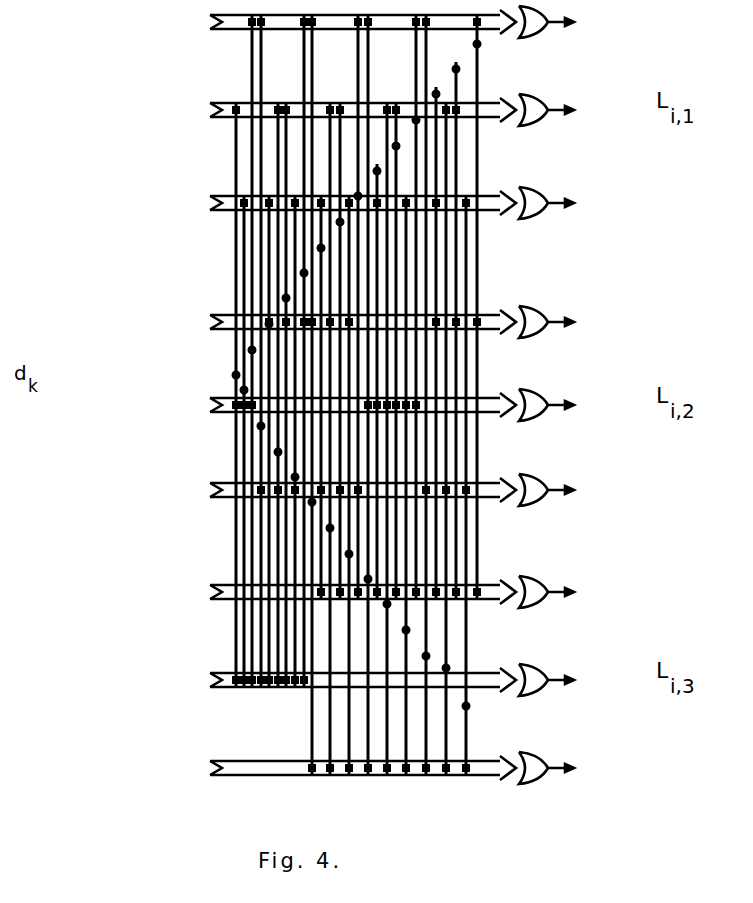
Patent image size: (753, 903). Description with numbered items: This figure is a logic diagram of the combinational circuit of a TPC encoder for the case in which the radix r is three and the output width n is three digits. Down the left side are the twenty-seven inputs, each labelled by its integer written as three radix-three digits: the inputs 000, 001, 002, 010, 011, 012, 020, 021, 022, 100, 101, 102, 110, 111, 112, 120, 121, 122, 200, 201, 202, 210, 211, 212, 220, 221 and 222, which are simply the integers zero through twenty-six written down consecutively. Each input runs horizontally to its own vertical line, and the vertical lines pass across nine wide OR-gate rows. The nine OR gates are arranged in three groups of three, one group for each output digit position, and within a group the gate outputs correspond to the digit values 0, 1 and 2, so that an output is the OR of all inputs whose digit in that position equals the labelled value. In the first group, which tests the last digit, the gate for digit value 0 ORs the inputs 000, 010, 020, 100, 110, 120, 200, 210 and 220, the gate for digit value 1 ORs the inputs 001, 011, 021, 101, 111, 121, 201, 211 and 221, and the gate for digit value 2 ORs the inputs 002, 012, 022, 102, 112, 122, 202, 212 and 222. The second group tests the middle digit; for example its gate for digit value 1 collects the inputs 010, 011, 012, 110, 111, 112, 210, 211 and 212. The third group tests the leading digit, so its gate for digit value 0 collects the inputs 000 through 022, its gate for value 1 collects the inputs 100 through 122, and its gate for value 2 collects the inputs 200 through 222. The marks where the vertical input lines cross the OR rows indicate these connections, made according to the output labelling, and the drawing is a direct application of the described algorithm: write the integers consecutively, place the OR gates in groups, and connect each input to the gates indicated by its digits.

The input 000 is at (477, 44).
The input 001 is at (456, 69).
The input 002 is at (436, 94).
The input 010 is at (416, 120).
The input 011 is at (396, 146).
The input 012 is at (377, 171).
The input 020 is at (358, 196).
The input 021 is at (340, 222).
The input 022 is at (321, 248).
The input 100 is at (304, 273).
The input 101 is at (286, 298).
The input 102 is at (269, 324).
The input 110 is at (252, 350).
The input 111 is at (236, 375).
The input 112 is at (244, 390).
The input 120 is at (261, 426).
The input 121 is at (278, 452).
The input 122 is at (295, 477).
The input 200 is at (312, 502).
The input 201 is at (330, 528).
The input 202 is at (349, 554).
The input 210 is at (368, 579).
The input 211 is at (387, 604).
The input 212 is at (406, 630).
The input 220 is at (426, 656).
The input 221 is at (446, 668).
The input 222 is at (466, 706).
The OR gate output digit value 0 is at (407, 307).
The OR gate output digit value 1 is at (407, 395).
The OR gate output digit value 2 is at (407, 485).